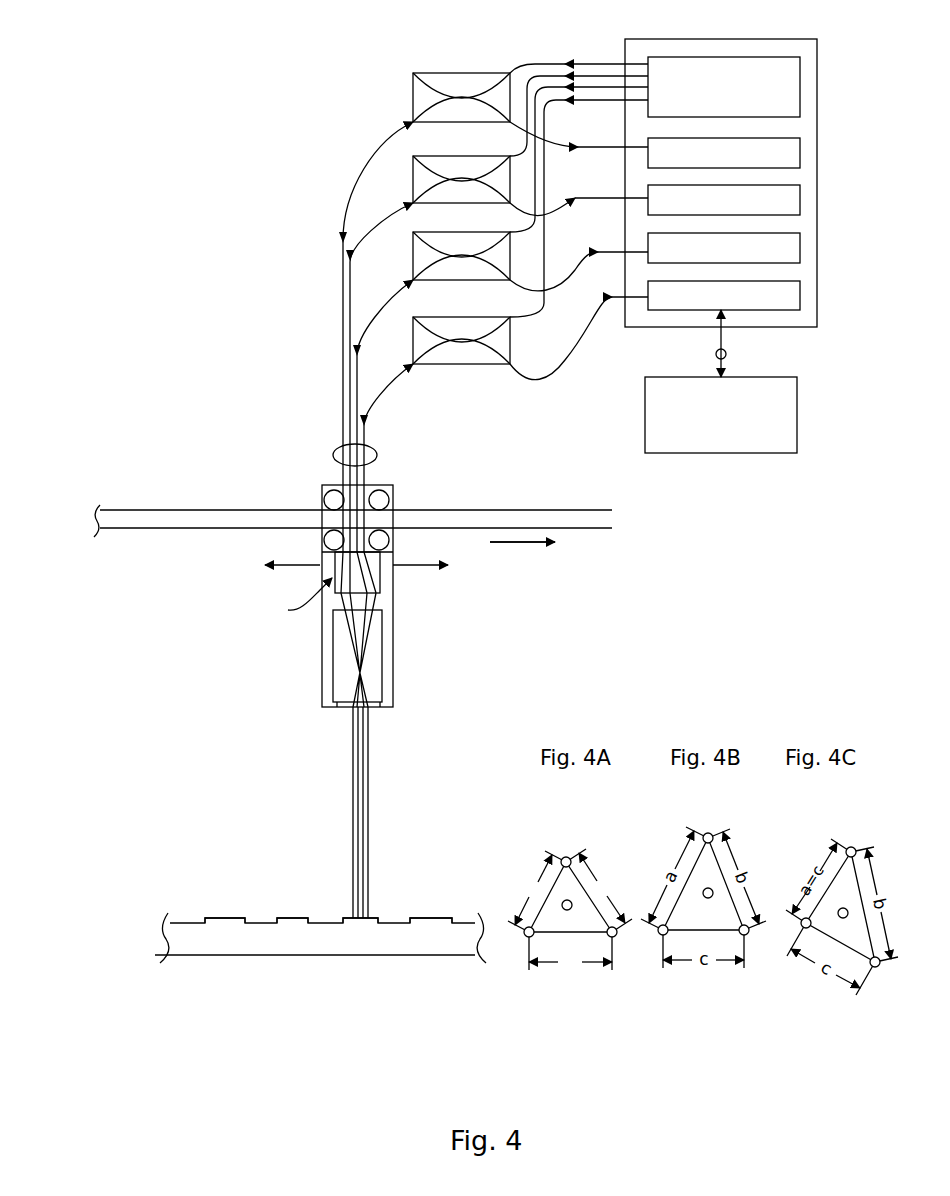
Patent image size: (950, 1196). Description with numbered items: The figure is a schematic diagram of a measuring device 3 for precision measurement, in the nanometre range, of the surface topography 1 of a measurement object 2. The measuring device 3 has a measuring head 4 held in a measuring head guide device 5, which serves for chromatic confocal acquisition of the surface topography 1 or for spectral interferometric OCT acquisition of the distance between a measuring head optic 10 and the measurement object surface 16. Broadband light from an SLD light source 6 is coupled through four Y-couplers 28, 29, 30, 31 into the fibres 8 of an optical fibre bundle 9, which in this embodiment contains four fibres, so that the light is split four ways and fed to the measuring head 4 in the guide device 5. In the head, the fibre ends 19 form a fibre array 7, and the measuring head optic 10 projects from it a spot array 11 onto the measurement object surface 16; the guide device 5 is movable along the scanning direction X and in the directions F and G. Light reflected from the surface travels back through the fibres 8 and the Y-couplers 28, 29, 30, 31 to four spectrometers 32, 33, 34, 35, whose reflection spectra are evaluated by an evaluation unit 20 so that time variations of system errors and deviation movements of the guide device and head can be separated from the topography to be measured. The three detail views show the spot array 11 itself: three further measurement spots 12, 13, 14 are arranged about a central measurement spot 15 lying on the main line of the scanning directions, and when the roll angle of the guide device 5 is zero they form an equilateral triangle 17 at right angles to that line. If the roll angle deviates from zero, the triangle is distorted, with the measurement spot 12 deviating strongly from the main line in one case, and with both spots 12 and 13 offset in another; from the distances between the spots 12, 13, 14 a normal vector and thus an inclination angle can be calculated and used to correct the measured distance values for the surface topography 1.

In FIG. 4, the surface topography 1 is at (433, 902).
In FIG. 4, the substrate 2 is at (397, 945).
In FIG. 4, the measuring device 3 is at (444, 596).
In FIG. 4, the measuring head 4 is at (390, 688).
In FIG. 4, the measuring head guide device 5 is at (499, 522).
In FIG. 4, the SLD light source 6 is at (648, 118).
In FIG. 4, the fibre array 7 is at (298, 600).
In FIG. 4, the fibres 8 is at (344, 197).
In FIG. 4, the fiber bundle clamp 9 is at (377, 453).
In FIG. 4, the measuring head optic 10 is at (373, 650).
In FIG. 4, the spot array 11 is at (347, 905).
In FIG. 4A, the spot array 11 is at (582, 840).
In FIG. 4B, the spot array 11 is at (718, 830).
In FIG. 4C, the spot array 11 is at (858, 838).
In FIG. 4A, the measurement spot 12 is at (563, 857).
In FIG. 4B, the measurement spot 12 is at (705, 833).
In FIG. 4C, the measurement spot 12 is at (848, 847).
In FIG. 4A, the measurement spot 13 is at (612, 937).
In FIG. 4B, the measurement spot 13 is at (746, 935).
In FIG. 4C, the measurement spot 13 is at (877, 967).
In FIG. 4A, the measurement spot 14 is at (527, 937).
In FIG. 4B, the measurement spot 14 is at (661, 935).
In FIG. 4C, the measurement spot 14 is at (803, 928).
In FIG. 4A, the central measurement spot 15 is at (564, 909).
In FIG. 4B, the central measurement spot 15 is at (705, 897).
In FIG. 4C, the central measurement spot 15 is at (840, 917).
In FIG. 4, the measurement object surface 16 is at (293, 917).
In FIG. 4A, the equilateral triangle 17 is at (502, 885).
In FIG. 4, the fibre ends 19 is at (367, 593).
In FIG. 4, the evaluation unit 20 is at (778, 448).
In FIG. 4, the Y-coupler 28 is at (412, 103).
In FIG. 4, the Y-coupler 29 is at (412, 188).
In FIG. 4, the Y-coupler 30 is at (416, 261).
In FIG. 4, the Y-coupler 31 is at (416, 345).
In FIG. 4, the spectrometer 32 is at (648, 167).
In FIG. 4, the spectrometer 33 is at (648, 215).
In FIG. 4, the spectrometer 34 is at (648, 263).
In FIG. 4, the spectrometer 35 is at (648, 311).